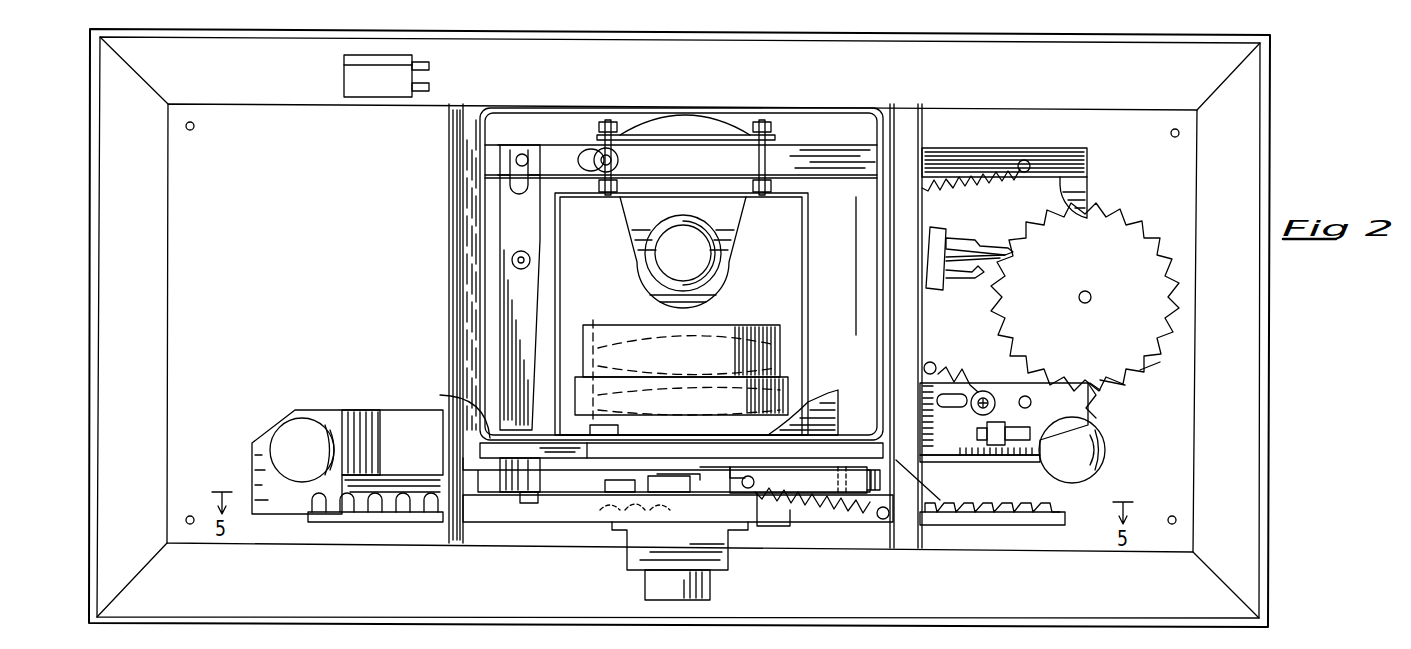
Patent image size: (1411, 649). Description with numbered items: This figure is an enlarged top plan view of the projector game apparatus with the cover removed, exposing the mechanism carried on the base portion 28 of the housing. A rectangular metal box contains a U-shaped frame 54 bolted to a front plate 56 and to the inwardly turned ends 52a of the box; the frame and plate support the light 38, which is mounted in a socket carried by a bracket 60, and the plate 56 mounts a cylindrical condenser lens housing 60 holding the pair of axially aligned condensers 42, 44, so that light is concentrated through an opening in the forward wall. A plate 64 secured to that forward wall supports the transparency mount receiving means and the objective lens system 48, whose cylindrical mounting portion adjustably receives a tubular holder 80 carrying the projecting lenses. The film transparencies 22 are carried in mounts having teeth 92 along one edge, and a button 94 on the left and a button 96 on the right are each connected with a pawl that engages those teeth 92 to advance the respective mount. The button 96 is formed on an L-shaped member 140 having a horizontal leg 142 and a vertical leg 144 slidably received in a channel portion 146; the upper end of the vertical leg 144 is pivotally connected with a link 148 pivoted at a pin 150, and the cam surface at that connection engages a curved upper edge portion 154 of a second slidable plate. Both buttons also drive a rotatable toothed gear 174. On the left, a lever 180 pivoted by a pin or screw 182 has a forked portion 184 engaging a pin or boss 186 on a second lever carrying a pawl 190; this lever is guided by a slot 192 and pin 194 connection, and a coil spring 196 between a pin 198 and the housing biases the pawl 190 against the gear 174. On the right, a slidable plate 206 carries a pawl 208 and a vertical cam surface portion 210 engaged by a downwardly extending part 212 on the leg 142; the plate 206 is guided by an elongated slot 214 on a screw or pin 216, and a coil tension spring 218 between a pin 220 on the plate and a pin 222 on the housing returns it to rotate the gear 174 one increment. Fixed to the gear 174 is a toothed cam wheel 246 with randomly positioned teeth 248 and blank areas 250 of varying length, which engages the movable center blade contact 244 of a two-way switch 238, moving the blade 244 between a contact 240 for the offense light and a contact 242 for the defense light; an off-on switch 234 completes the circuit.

The film transparencies 22 is at (355, 517).
The base portion 28 is at (312, 227).
The light 38 is at (662, 263).
The condenser 42 is at (631, 330).
The condenser 44 is at (648, 400).
The objective lens system 48 is at (676, 610).
The inwardly turned ends 52a is at (492, 425).
The U-shaped frame 54 is at (814, 248).
The front plate 56 is at (752, 422).
The bracket / condenser lens housing 60 is at (632, 215).
The plate 64 is at (568, 515).
The tubular holder 80 is at (648, 585).
The teeth 92 is at (382, 505).
The button 94 is at (305, 428).
The button 96 is at (1106, 465).
The L-shaped member 140 is at (1026, 472).
The horizontal leg 142 is at (935, 448).
The vertical leg 144 is at (924, 326).
The channel portion 146 is at (808, 442).
The link 148 is at (686, 463).
The pin 150 is at (523, 503).
The curved upper edge portion 154 is at (875, 492).
The toothed element or gear 174 is at (1093, 294).
The lever 180 is at (505, 322).
The pin or screw 182 is at (511, 262).
The forked portion 184 is at (500, 182).
The pin or boss 186 is at (522, 154).
The pawl 190 is at (1085, 190).
The slot 192 is at (588, 152).
The pin 194 is at (606, 150).
The coil spring 196 is at (962, 180).
The pin 198 is at (1024, 160).
The slidable plate 206 is at (1096, 418).
The pawl 208 is at (1095, 392).
The cam surface portion 210 is at (1008, 430).
The downwardly extending part 212 is at (995, 446).
The elongated slot 214 is at (955, 408).
The screw or pin 216 is at (983, 391).
The coil tension spring 218 is at (947, 367).
The pin 220 is at (1025, 396).
The pin 222 is at (930, 362).
The off-on switch 234 is at (386, 62).
The two-way switch 238 is at (936, 223).
The contact 240 is at (975, 250).
The contact 242 is at (982, 272).
The movable center blade contact 244 is at (1000, 252).
The toothed cam wheel 246 is at (1100, 266).
The teeth 248 is at (1118, 382).
The blank areas 250 is at (1158, 365).